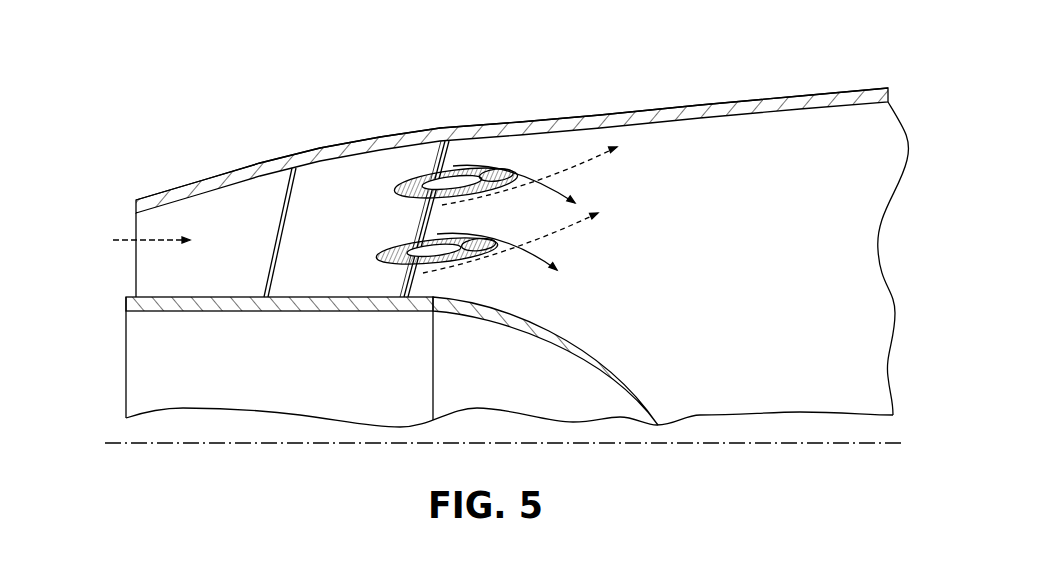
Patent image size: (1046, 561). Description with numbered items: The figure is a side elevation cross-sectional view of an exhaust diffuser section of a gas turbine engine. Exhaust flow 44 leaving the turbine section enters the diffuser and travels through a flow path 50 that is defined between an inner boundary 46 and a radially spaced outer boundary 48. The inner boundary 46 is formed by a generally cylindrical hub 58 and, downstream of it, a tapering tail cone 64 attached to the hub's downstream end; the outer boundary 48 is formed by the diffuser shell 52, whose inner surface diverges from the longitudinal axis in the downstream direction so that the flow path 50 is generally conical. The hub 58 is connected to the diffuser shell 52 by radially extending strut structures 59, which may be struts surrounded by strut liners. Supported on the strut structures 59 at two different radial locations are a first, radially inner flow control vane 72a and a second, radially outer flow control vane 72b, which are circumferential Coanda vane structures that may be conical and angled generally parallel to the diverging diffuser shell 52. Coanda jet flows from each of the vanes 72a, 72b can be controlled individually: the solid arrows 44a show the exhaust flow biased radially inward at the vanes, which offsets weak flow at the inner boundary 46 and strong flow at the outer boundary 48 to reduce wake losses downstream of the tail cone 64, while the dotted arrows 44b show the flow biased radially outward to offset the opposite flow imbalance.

The exhaust flow 44 is at (126, 240).
The solid arrows 44a is at (563, 189).
The dotted arrows 44b is at (564, 167).
The inner boundary 46 is at (212, 297).
The outer boundary 48 is at (204, 178).
The flow path 50 is at (170, 218).
The diffuser shell 52 is at (257, 163).
The hub 58 is at (157, 297).
The strut structures 59 is at (279, 237).
The tail cone 64 is at (600, 362).
The first flow control vane 72a is at (452, 262).
The second flow control vane 72b is at (463, 165).